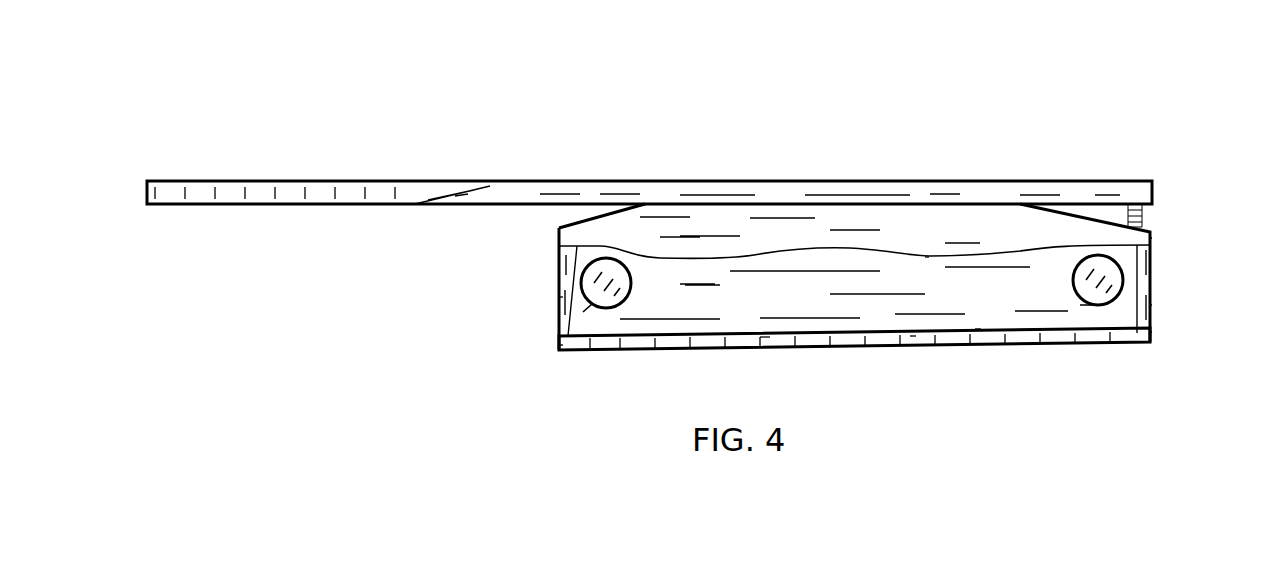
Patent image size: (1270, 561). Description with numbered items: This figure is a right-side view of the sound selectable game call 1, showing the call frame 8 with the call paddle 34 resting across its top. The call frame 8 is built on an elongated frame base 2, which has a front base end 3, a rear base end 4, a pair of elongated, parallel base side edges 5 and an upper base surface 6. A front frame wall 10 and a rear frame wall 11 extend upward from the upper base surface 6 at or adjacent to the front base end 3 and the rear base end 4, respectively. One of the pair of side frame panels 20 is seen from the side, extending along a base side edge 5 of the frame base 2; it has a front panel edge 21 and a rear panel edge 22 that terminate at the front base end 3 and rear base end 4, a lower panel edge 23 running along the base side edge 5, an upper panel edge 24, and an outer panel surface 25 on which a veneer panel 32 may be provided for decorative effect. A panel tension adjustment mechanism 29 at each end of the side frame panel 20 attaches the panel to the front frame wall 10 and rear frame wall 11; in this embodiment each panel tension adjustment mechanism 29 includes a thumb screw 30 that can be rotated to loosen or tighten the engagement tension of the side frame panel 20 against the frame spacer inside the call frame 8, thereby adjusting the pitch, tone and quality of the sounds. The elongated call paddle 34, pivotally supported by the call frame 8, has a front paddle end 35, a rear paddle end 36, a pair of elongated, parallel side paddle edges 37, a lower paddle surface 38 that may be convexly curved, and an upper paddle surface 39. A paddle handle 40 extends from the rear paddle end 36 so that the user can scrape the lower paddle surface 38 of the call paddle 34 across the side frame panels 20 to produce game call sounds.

The sound selectable game call 1 is at (316, 68).
The frame base 2 is at (672, 355).
The front base end 3 is at (1154, 333).
The rear base end 4 is at (558, 345).
The base side edges 5 is at (914, 338).
The upper base surface 6 is at (978, 329).
The call frame 8 is at (578, 368).
The front frame wall 10 is at (1152, 305).
The rear frame wall 11 is at (557, 297).
The side frame panels 20 is at (1152, 228).
The front panel edge 21 is at (1154, 238).
The rear panel edge 22 is at (556, 240).
The lower panel edge 23 is at (766, 340).
The upper panel edge 24 is at (618, 204).
The outer panel surface 25 is at (776, 300).
The panel tension adjustment mechanism 29 is at (590, 305).
The thumb screw 30 is at (628, 280).
The veneer panel 32 is at (926, 257).
The call paddle 34 is at (482, 180).
The front paddle end 35 is at (1152, 196).
The rear paddle end 36 is at (413, 204).
The side paddle edges 37 is at (770, 194).
The lower paddle surface 38 is at (531, 206).
The upper paddle surface 39 is at (617, 181).
The paddle handle 40 is at (225, 204).